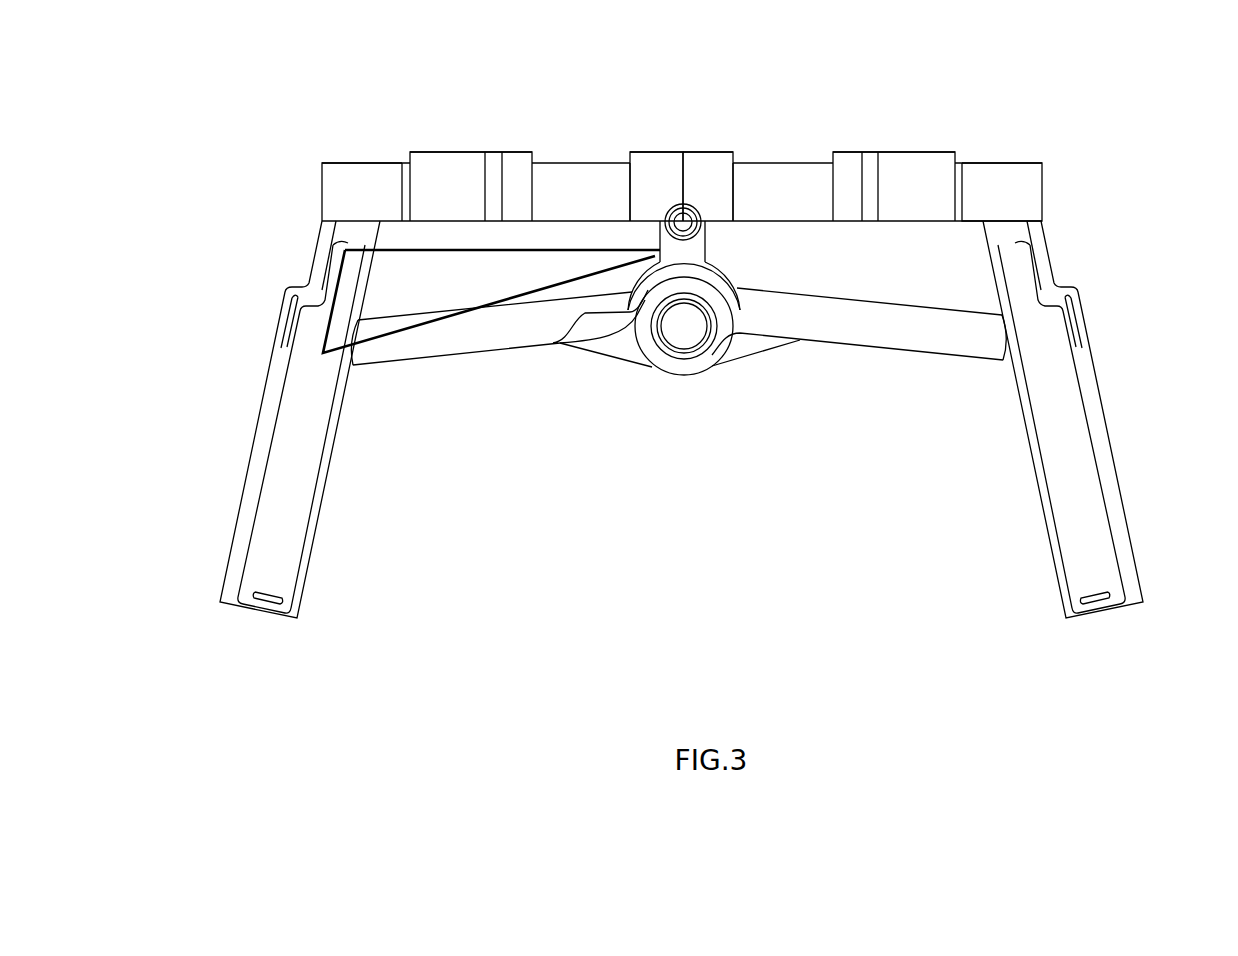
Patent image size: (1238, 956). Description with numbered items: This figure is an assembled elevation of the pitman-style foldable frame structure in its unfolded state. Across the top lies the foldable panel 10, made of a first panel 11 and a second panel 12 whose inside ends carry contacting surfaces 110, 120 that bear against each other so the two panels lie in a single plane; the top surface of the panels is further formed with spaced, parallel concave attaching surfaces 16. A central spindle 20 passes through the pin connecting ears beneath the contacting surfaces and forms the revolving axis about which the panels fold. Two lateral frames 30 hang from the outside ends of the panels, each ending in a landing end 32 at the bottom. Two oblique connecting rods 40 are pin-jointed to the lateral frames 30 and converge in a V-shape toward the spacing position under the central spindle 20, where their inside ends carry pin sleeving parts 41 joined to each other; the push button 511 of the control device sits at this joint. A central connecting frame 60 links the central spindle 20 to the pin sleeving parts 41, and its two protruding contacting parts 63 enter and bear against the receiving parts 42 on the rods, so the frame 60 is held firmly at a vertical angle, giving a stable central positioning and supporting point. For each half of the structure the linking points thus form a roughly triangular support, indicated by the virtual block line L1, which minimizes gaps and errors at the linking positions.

The foldable panel 10 is at (702, 56).
The first panel 11 is at (519, 152).
The second panel 12 is at (733, 152).
The concave attaching surface 16 is at (360, 162).
The contacting surface 110 is at (669, 162).
The contacting surface 120 is at (682, 182).
The virtual block line L1 is at (442, 250).
The central spindle 20 is at (683, 222).
The central connecting frame 60 is at (705, 248).
The contacting part 63 is at (587, 348).
The receiving part 42 is at (570, 322).
The oblique connecting rod 40 is at (475, 343).
The pin sleeving part 41 is at (657, 367).
The push button 511 is at (694, 338).
The lateral frame 30 is at (254, 410).
The landing end 32 is at (266, 614).